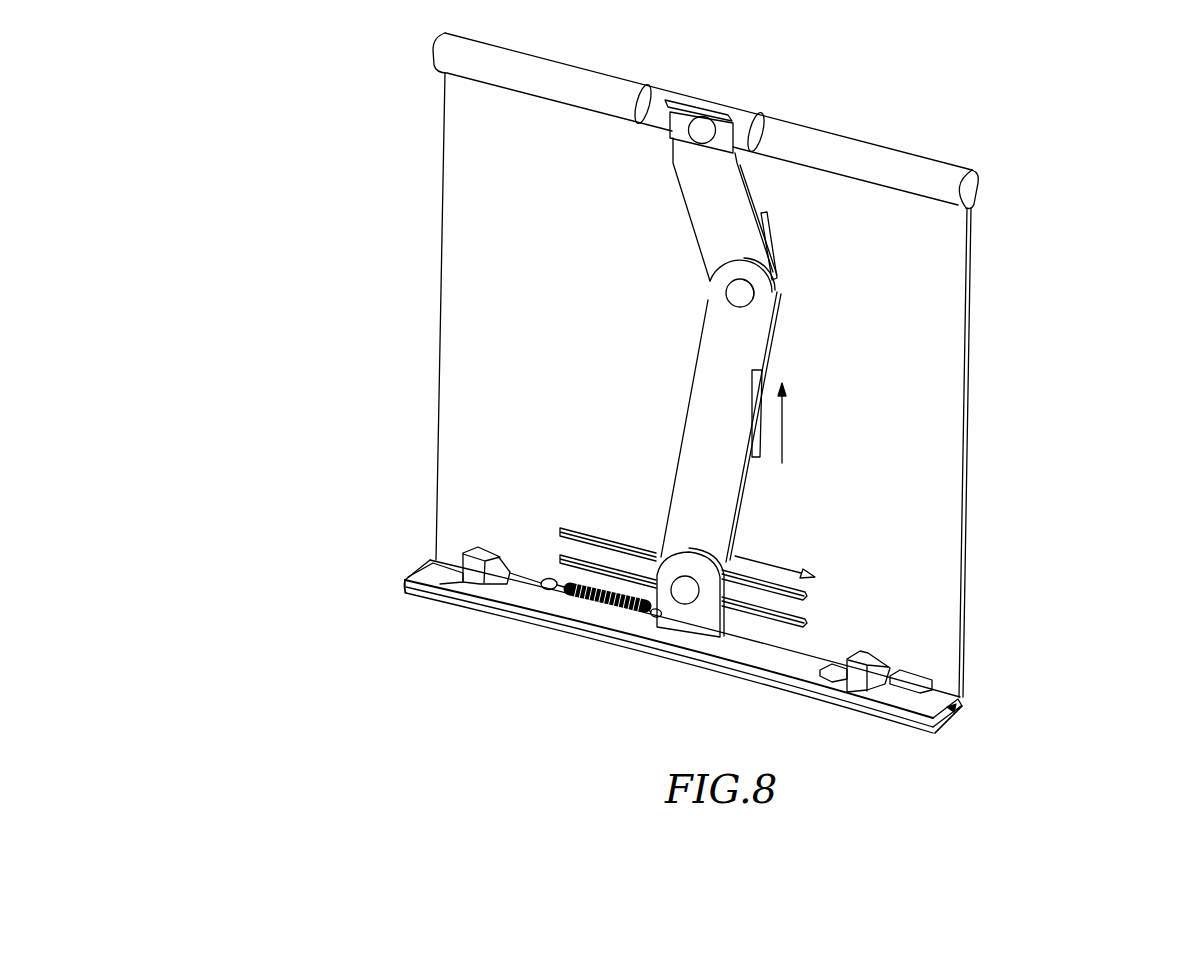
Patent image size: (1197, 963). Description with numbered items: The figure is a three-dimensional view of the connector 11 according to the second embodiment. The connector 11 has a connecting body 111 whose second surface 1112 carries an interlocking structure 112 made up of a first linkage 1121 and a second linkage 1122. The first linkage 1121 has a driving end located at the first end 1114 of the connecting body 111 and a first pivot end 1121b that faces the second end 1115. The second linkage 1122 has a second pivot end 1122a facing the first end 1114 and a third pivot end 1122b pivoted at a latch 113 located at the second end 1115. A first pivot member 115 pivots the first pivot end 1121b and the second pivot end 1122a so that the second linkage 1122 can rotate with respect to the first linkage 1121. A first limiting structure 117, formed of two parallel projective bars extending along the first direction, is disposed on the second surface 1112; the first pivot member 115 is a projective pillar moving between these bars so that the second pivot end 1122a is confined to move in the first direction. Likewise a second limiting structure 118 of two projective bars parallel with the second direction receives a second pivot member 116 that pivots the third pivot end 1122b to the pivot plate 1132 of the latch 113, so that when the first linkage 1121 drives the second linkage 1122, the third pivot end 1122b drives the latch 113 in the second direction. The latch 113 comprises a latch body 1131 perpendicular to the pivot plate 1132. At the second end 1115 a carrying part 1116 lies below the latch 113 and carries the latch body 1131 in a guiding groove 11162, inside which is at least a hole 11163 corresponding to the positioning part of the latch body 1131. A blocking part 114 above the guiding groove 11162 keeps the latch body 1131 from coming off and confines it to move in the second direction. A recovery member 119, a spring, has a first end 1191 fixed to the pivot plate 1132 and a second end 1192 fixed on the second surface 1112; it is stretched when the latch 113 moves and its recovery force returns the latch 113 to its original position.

The connector 11 is at (1176, 56).
The connecting body 111 is at (437, 387).
The second surface 1112 is at (481, 338).
The first end 1114 is at (425, 60).
The first linkage 1121 is at (757, 243).
The first pivot end 1121b is at (782, 280).
The second pivot end 1122a is at (717, 268).
The first limiting structure 117 is at (765, 233).
The interlocking structure 112 is at (785, 323).
The first pivot member 115 is at (755, 293).
The second linkage 1122 is at (762, 370).
The third pivot end 1122b is at (720, 603).
The pivot plate 1132 is at (698, 618).
The second pivot member 116 is at (678, 575).
The second limiting structure 118 is at (817, 602).
The latch 113 is at (950, 707).
The latch body 1131 is at (950, 701).
The carrying part 1116 is at (935, 737).
The hole 11163 is at (947, 712).
The second end 1115 is at (403, 583).
The guiding groove 11162 is at (433, 568).
The blocking part 114 is at (548, 578).
The second end 1192 is at (541, 590).
The recovery member 119 is at (607, 610).
The first end 1191 is at (655, 617).